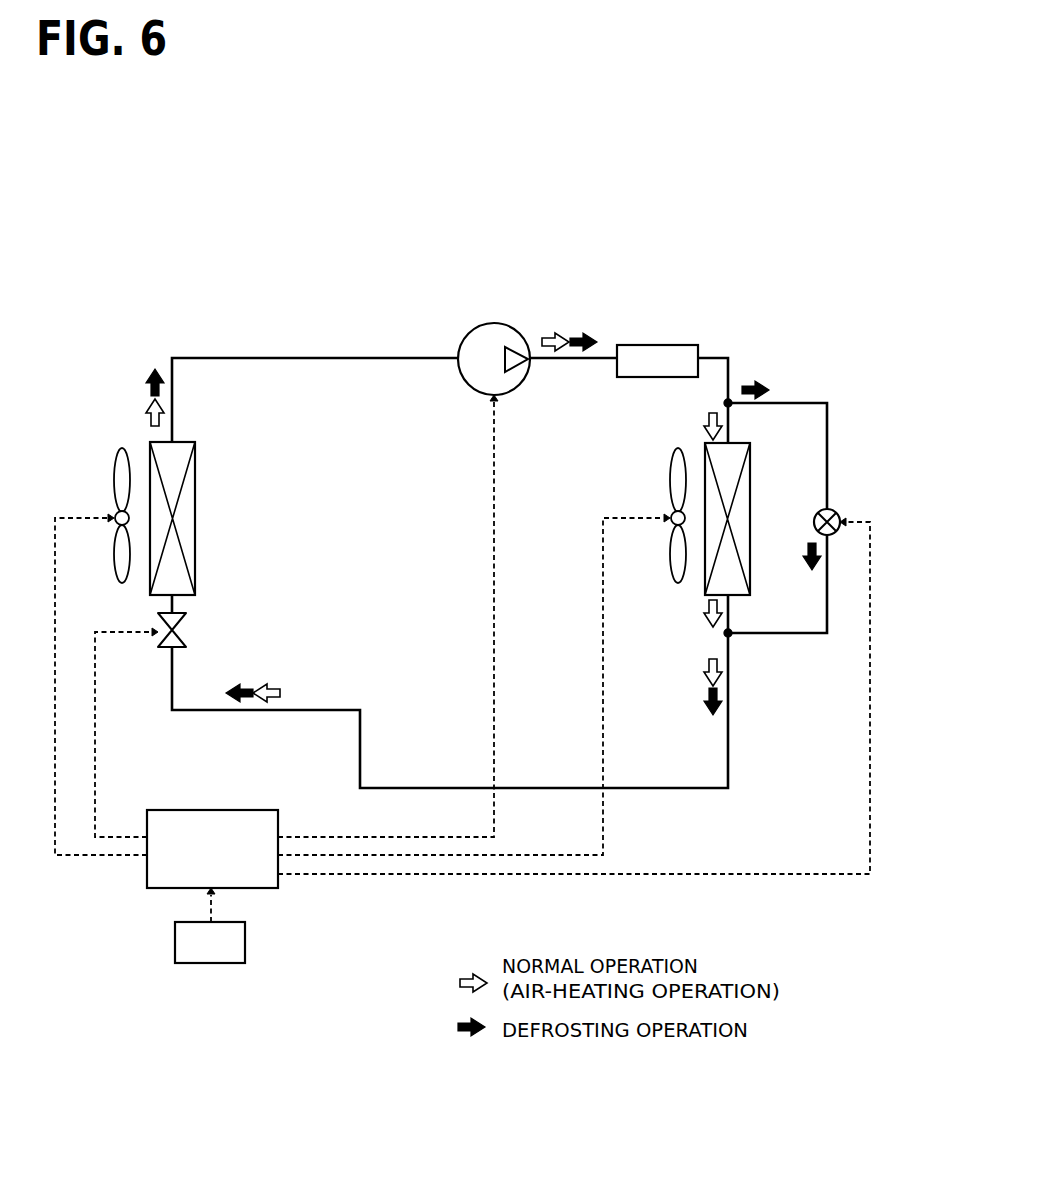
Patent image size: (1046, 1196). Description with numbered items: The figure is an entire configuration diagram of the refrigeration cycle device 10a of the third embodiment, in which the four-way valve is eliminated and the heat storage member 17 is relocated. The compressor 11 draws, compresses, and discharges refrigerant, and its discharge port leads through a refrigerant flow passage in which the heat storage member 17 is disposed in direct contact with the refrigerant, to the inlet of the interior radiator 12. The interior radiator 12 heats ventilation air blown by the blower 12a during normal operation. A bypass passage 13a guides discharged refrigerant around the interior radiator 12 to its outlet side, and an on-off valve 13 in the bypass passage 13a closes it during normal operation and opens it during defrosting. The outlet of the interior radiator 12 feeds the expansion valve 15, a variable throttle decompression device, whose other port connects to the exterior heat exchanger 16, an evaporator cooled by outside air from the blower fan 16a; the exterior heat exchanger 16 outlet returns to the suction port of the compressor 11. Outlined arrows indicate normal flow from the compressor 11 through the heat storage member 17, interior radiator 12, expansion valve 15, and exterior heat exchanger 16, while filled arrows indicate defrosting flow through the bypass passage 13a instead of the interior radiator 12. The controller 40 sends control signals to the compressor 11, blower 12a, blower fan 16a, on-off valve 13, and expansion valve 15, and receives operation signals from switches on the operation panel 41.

The refrigeration cycle device 10a is at (700, 318).
The compressor 11 is at (514, 328).
The heat storage member 17 is at (659, 345).
The bypass passage 13a is at (813, 403).
The on-off valve 13 is at (838, 514).
The exterior heat exchanger 16 is at (195, 465).
The interior radiator 12 is at (750, 470).
The blower fan 16a is at (121, 577).
The blower 12a is at (677, 577).
The expansion valve 15 is at (161, 648).
The controller 40 is at (211, 810).
The operation panel 41 is at (245, 930).